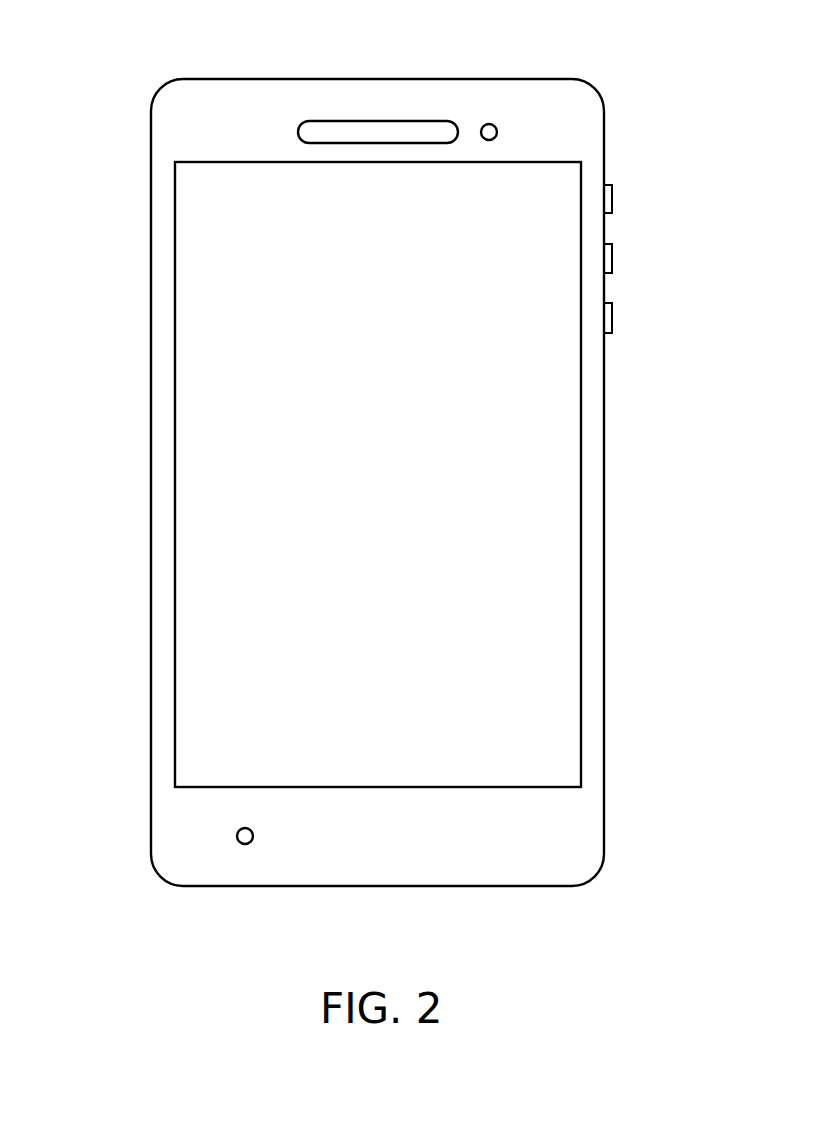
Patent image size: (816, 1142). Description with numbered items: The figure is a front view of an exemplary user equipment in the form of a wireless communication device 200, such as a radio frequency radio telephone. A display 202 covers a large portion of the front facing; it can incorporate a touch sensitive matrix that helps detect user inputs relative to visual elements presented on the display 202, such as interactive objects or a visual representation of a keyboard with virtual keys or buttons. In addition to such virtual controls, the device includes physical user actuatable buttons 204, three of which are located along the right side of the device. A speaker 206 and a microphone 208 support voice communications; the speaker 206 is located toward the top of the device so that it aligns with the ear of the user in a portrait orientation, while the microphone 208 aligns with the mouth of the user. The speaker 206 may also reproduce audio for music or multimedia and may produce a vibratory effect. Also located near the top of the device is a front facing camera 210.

The wireless communication device 200 is at (118, 62).
The display 202 is at (555, 503).
The physical user actuatable buttons 204 is at (612, 199).
The speaker 206 is at (378, 120).
The microphone 208 is at (245, 844).
The front facing camera 210 is at (488, 124).